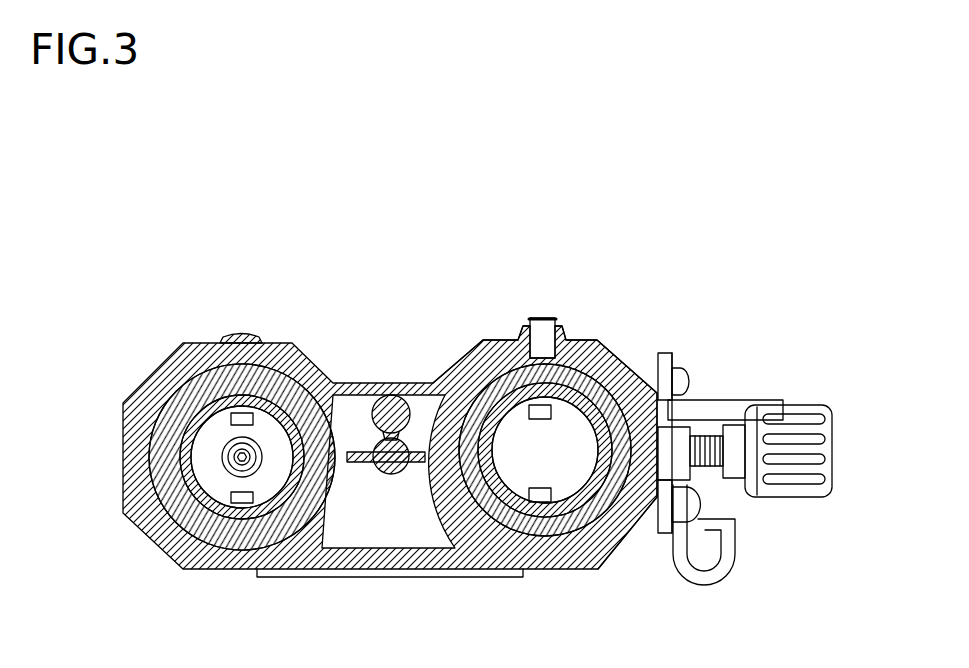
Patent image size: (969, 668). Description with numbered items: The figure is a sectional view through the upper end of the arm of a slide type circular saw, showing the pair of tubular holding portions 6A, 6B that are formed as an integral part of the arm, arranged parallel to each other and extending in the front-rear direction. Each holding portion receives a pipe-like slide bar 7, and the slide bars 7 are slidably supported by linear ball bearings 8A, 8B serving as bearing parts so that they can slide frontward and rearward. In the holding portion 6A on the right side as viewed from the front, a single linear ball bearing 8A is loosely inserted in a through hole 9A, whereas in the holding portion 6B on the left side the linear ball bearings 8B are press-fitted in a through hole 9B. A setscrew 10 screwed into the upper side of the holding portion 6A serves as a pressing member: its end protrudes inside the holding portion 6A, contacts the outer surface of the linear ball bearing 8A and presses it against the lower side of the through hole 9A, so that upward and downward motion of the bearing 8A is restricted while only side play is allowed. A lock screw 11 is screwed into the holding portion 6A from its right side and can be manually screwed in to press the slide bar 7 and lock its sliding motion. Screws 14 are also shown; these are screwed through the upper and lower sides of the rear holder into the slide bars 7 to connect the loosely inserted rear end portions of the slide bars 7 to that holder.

The holding portion 6A is at (603, 353).
The holding portion 6B is at (150, 387).
The slide bar 7 is at (213, 408).
The linear ball bearing 8A is at (568, 527).
The linear ball bearing 8B is at (217, 530).
The through hole 9A is at (623, 535).
The through hole 9B is at (162, 533).
The setscrew 10 is at (538, 335).
The lock screw 11 is at (835, 444).
The screw 14 is at (243, 337).